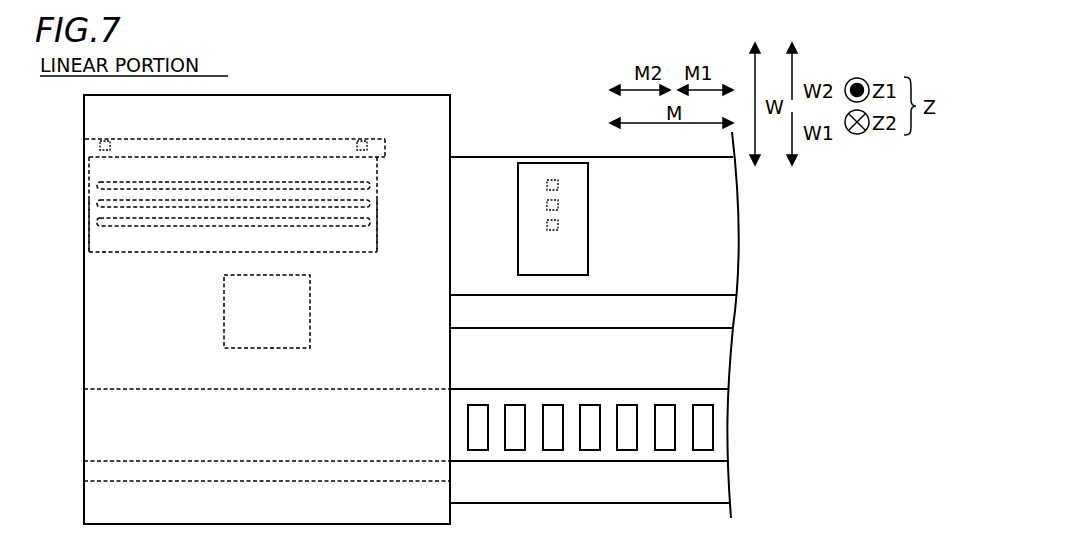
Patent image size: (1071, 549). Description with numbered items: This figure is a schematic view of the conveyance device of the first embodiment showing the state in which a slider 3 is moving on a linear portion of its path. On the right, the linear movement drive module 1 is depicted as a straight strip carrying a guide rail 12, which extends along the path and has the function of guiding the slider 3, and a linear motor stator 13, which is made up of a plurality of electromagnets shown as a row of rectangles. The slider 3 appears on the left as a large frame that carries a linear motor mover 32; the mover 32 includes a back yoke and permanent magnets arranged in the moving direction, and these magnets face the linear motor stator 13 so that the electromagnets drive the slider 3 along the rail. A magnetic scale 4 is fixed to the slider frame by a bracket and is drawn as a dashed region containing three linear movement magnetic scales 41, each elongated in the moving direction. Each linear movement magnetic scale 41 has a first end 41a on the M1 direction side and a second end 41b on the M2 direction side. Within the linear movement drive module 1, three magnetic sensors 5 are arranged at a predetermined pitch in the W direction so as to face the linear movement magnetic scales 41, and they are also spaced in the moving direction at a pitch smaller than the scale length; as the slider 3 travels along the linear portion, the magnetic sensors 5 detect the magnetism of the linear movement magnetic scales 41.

The linear movement drive module 1 is at (575, 147).
The slider 3 is at (456, 120).
The magnetic scale 4 is at (350, 260).
The magnetic sensor 5 is at (558, 184).
The guide rail 12 is at (651, 295).
The linear motor stator 13 is at (588, 405).
The linear motor mover 32 is at (388, 388).
The linear movement magnetic scale 41 is at (97, 184).
The first end of the linear movement magnetic scale 41a is at (377, 236).
The second end of the linear movement magnetic scale 41b is at (97, 228).